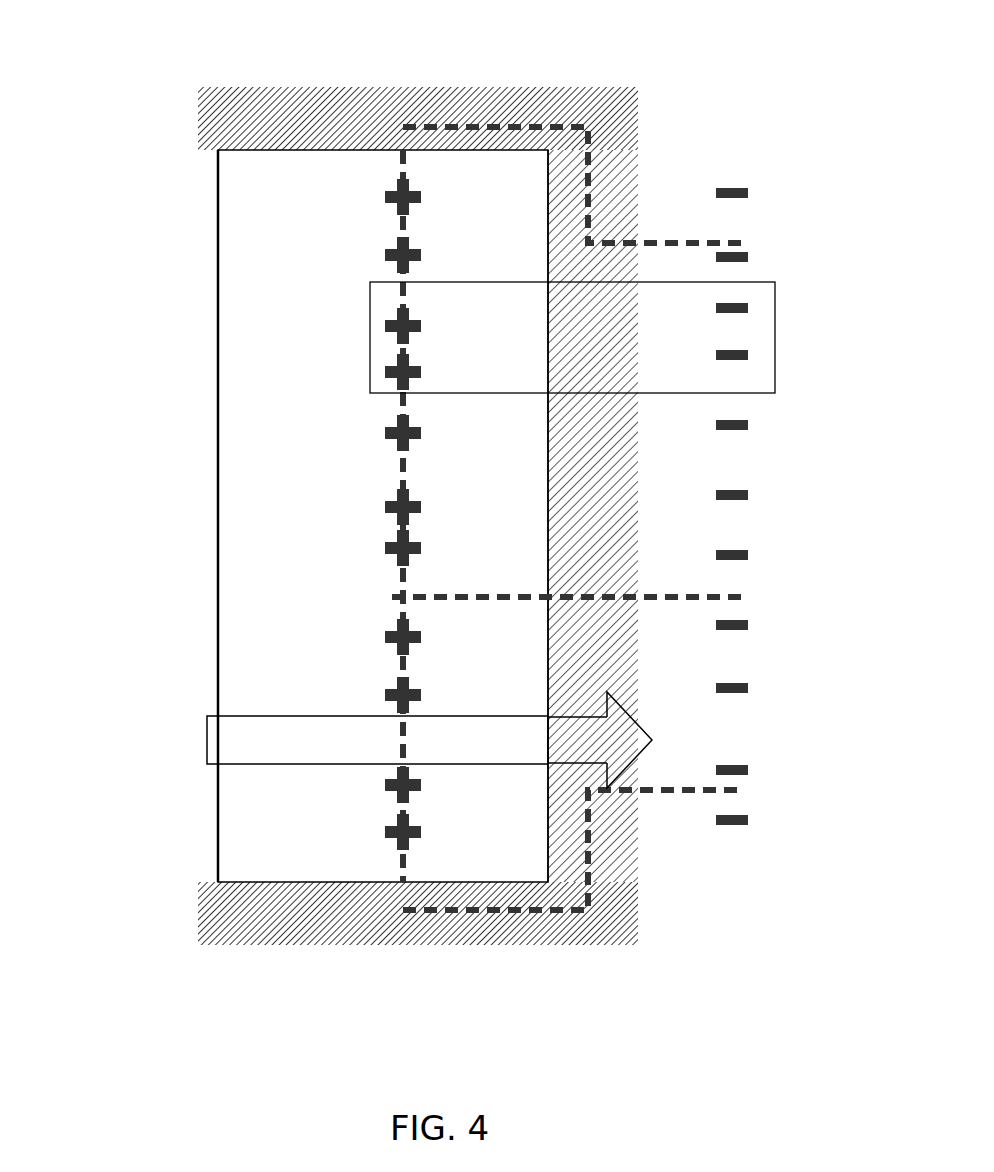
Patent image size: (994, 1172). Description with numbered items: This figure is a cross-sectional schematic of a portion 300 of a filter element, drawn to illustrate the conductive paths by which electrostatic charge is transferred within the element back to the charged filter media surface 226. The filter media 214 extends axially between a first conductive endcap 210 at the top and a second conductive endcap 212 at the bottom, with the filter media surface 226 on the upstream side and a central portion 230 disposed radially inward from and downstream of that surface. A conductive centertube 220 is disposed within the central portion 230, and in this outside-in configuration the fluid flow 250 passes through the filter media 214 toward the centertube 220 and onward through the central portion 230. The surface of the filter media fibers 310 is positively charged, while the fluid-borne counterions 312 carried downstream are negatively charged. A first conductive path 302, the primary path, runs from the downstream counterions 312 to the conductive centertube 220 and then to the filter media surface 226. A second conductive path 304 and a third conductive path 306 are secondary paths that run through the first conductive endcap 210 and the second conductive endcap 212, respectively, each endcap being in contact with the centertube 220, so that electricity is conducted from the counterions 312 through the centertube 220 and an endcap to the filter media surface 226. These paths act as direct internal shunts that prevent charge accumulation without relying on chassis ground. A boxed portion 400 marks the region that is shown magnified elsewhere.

The portion of the filter element 300 is at (328, 487).
The first conductive endcap 210 is at (237, 129).
The second conductive endcap 212 is at (237, 913).
The filter media 214 is at (298, 343).
The conductive centertube 220 is at (590, 398).
The filter media surface 226 is at (215, 548).
The central portion 230 is at (672, 573).
The fluid flow 250 is at (429, 740).
The first conductive path 302 is at (382, 597).
The second conductive path 304 is at (394, 131).
The third conductive path 306 is at (388, 896).
The filter media fibers 310 is at (386, 509).
The counterions 312 is at (700, 687).
The portion of the filter element 400 is at (775, 282).